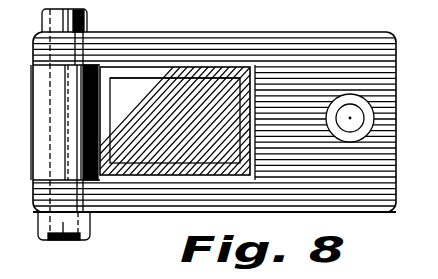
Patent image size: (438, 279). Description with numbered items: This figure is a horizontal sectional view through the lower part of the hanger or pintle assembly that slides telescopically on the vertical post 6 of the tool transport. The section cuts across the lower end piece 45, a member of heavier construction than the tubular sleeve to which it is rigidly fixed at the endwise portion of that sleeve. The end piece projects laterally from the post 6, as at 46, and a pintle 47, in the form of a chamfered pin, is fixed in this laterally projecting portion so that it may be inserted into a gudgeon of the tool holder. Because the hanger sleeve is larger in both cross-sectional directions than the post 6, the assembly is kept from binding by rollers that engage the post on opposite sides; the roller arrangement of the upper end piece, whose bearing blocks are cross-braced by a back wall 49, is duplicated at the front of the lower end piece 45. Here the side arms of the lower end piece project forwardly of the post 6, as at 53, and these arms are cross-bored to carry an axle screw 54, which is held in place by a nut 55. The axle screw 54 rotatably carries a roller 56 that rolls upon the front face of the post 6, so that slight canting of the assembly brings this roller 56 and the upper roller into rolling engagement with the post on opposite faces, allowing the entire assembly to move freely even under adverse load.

The vertical post 6 is at (185, 80).
The lower end piece 45 is at (116, 195).
The lateral projection of end piece 46 is at (34, 46).
The pintle 47 is at (350, 116).
The back wall 49 is at (35, 122).
The forwardly projecting side arms 53 is at (33, 42).
The axle screw 54 is at (88, 26).
The nut 55 is at (65, 226).
The roller 56 is at (105, 132).